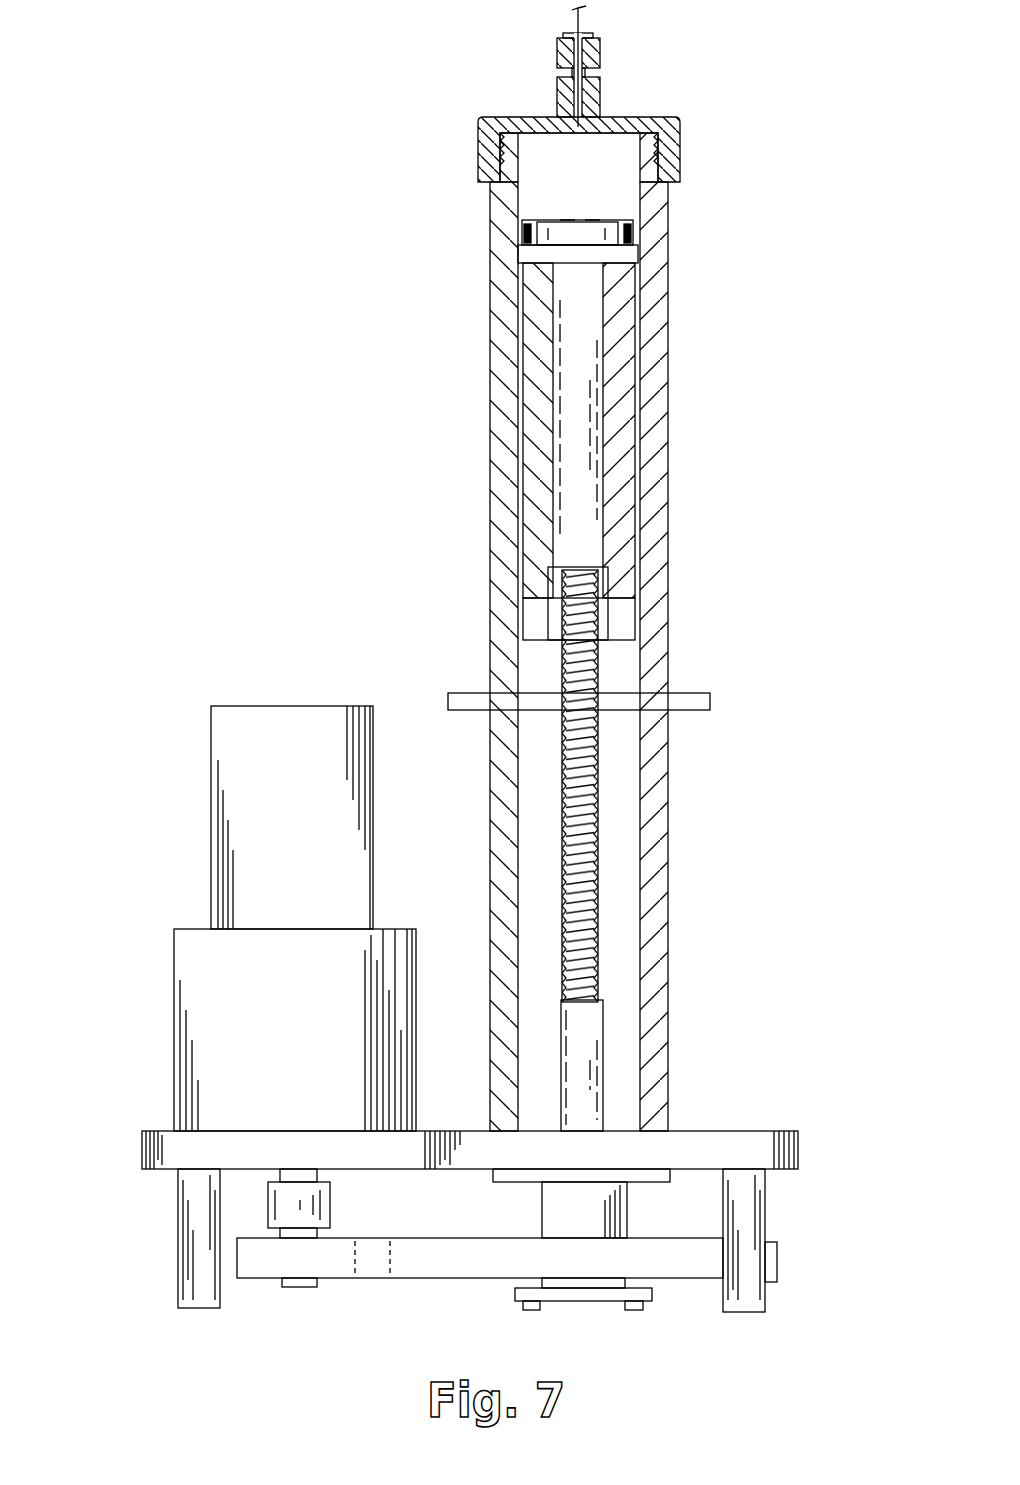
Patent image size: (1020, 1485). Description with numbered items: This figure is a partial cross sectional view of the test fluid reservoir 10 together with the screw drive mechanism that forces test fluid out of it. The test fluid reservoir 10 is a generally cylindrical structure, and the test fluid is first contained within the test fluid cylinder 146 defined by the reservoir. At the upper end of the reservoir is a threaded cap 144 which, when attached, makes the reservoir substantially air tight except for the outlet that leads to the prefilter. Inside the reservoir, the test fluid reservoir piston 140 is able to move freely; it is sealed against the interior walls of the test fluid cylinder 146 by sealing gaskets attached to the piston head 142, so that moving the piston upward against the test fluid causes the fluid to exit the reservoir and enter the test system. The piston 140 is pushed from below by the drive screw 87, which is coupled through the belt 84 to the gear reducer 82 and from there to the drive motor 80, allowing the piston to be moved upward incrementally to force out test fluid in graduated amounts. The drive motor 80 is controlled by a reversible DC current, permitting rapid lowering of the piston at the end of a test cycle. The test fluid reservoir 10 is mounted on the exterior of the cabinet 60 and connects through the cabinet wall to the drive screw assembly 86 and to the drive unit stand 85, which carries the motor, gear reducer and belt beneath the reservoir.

The test fluid reservoir 10 is at (458, 425).
The cabinet 60 is at (688, 695).
The drive motor 80 is at (281, 817).
The gear reducer 82 is at (281, 1026).
The belt 84 is at (472, 1276).
The drive unit stand 85 is at (750, 1135).
The drive screw assembly 86 is at (667, 908).
The drive screw 87 is at (597, 773).
The test fluid reservoir piston 140 is at (620, 440).
The piston head 142 is at (625, 253).
The threaded cap 144 is at (673, 143).
The test fluid cylinder 146 is at (563, 186).